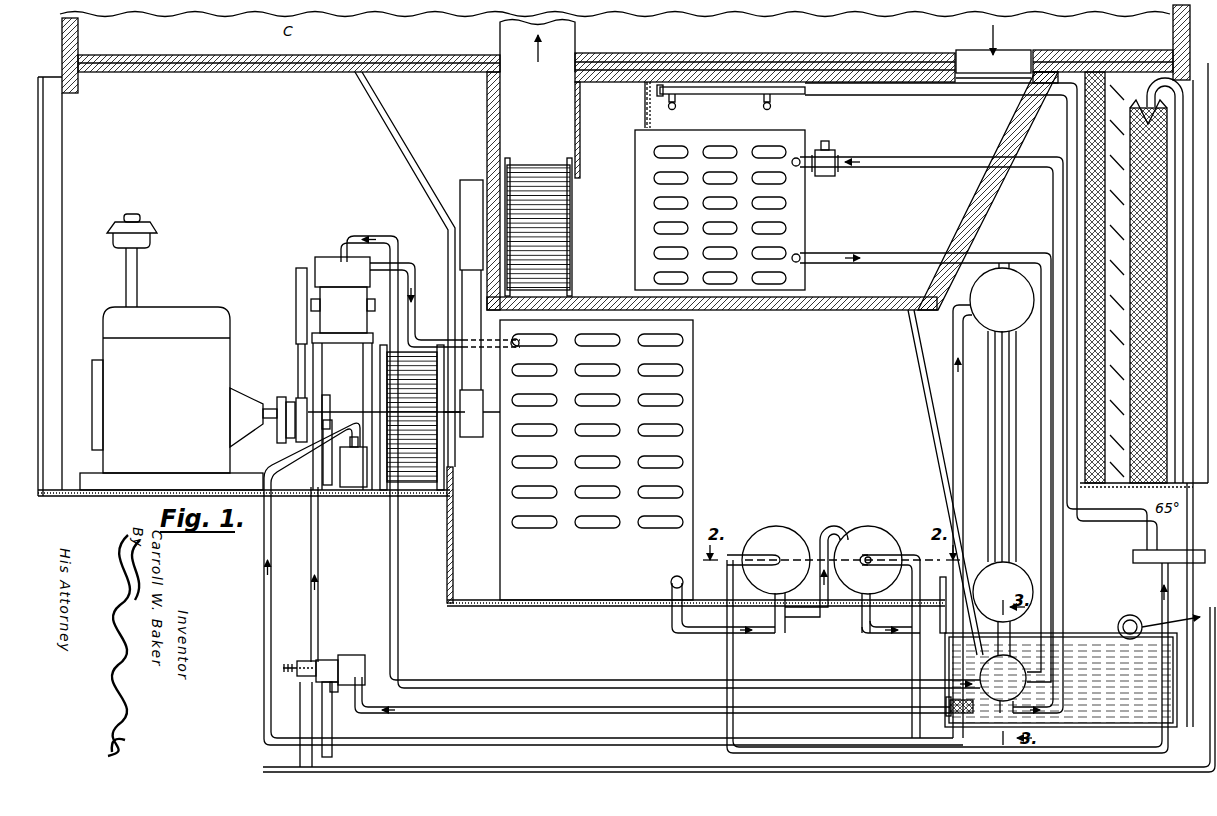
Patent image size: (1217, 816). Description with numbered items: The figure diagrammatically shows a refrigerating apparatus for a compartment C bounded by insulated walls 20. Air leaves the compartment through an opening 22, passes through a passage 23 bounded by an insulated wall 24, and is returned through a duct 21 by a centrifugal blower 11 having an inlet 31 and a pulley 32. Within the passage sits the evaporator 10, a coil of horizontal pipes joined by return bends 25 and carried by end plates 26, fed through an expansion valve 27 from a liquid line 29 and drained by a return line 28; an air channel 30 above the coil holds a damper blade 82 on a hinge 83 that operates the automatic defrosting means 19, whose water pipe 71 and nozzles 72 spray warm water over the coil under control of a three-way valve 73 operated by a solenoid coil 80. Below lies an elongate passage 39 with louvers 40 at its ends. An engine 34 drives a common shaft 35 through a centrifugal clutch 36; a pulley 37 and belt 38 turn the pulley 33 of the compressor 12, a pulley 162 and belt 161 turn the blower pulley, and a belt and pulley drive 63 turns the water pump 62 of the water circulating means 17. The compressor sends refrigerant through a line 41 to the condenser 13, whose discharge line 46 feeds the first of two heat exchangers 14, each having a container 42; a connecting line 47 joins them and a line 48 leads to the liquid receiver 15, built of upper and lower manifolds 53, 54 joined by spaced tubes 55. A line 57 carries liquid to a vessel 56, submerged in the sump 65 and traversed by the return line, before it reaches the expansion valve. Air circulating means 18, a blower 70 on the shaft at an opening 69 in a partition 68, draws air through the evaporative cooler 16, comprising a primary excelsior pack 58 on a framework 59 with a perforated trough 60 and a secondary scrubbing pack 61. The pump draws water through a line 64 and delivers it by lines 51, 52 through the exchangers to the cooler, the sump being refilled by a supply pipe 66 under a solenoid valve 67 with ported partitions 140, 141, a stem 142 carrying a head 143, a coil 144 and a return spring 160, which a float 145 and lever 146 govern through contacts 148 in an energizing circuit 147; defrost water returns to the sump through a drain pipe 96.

The evaporator 10 is at (806, 220).
The air circulating means 11 is at (575, 210).
The compressor 12 is at (322, 255).
The condenser 13 is at (696, 424).
The heat exchangers 14 is at (770, 525).
The liquid receiver 15 is at (1005, 267).
The evaporative cooler 16 is at (1168, 210).
The water circulating means 17 is at (355, 480).
The air circulating means 18 is at (440, 462).
The automatic defrosting means 19 is at (643, 112).
The insulated walls 20 is at (130, 53).
The air duct 21 is at (498, 33).
The air duct or opening 22 is at (968, 50).
The passage 23 is at (904, 141).
The thermally insulated wall 24 is at (486, 108).
The return bends 25 is at (672, 244).
The housing or end plates 26 is at (636, 256).
The expansion valve 27 is at (827, 141).
The refrigerant return line 28 is at (878, 252).
The line 29 is at (968, 157).
The air passage or channel 30 is at (731, 101).
The housing inlet 31 is at (581, 178).
The pulley 32 is at (460, 178).
The drive pulley 33 is at (295, 280).
The engine 34 is at (178, 352).
The common drive shaft 35 is at (343, 410).
The centrifugal clutch 36 is at (280, 396).
The pulley 37 is at (299, 396).
The belt 38 is at (298, 356).
The elongate tunnel or passage 39 is at (696, 522).
The grills or louvers 40 is at (48, 153).
The line 41 is at (410, 262).
The tank or container 42 is at (790, 528).
The discharge line 46 is at (686, 633).
The connecting line 47 is at (808, 640).
The pipe or line 48 is at (866, 640).
The line 51 is at (277, 530).
The line 52 is at (735, 658).
The upper manifold 53 is at (993, 503).
The lower manifold 54 is at (1003, 592).
The tubes 55 is at (1005, 480).
The container or vessel 56 is at (986, 684).
The line 57 is at (1012, 632).
The primary pack 58 is at (1167, 160).
The support or framework 59 is at (1115, 487).
The perforated trough 60 is at (1183, 110).
The secondary air permeable pack 61 is at (1104, 93).
The pump 62 is at (335, 478).
The belt and pulley drive 63 is at (320, 480).
The line 64 is at (325, 542).
The sump 65 is at (1083, 642).
The water supply pipe 66 is at (332, 725).
The valve 67 is at (368, 660).
The partition 68 is at (395, 150).
The opening 69 is at (455, 483).
The blower 70 is at (440, 440).
The water pipe 71 is at (960, 100).
The discharge nozzles 72 is at (676, 108).
The control valve 73 is at (1132, 558).
The solenoid coil 80 is at (1193, 600).
The damper or pivoted blade 82 is at (643, 95).
The hinge 83 is at (648, 80).
The water return line 96 is at (910, 340).
The ported partition 140 is at (355, 656).
The ported partition 141 is at (327, 660).
The movable stem 142 is at (307, 660).
The valve head 143 is at (335, 678).
The solenoid coil 144 is at (283, 650).
The float 145 is at (1130, 615).
The lever 146 is at (1165, 620).
The energizing circuit 147 is at (655, 766).
The contacts 148 is at (1212, 618).
The spring 160 is at (290, 664).
The belt 161 is at (470, 345).
The pulley 162 is at (484, 418).